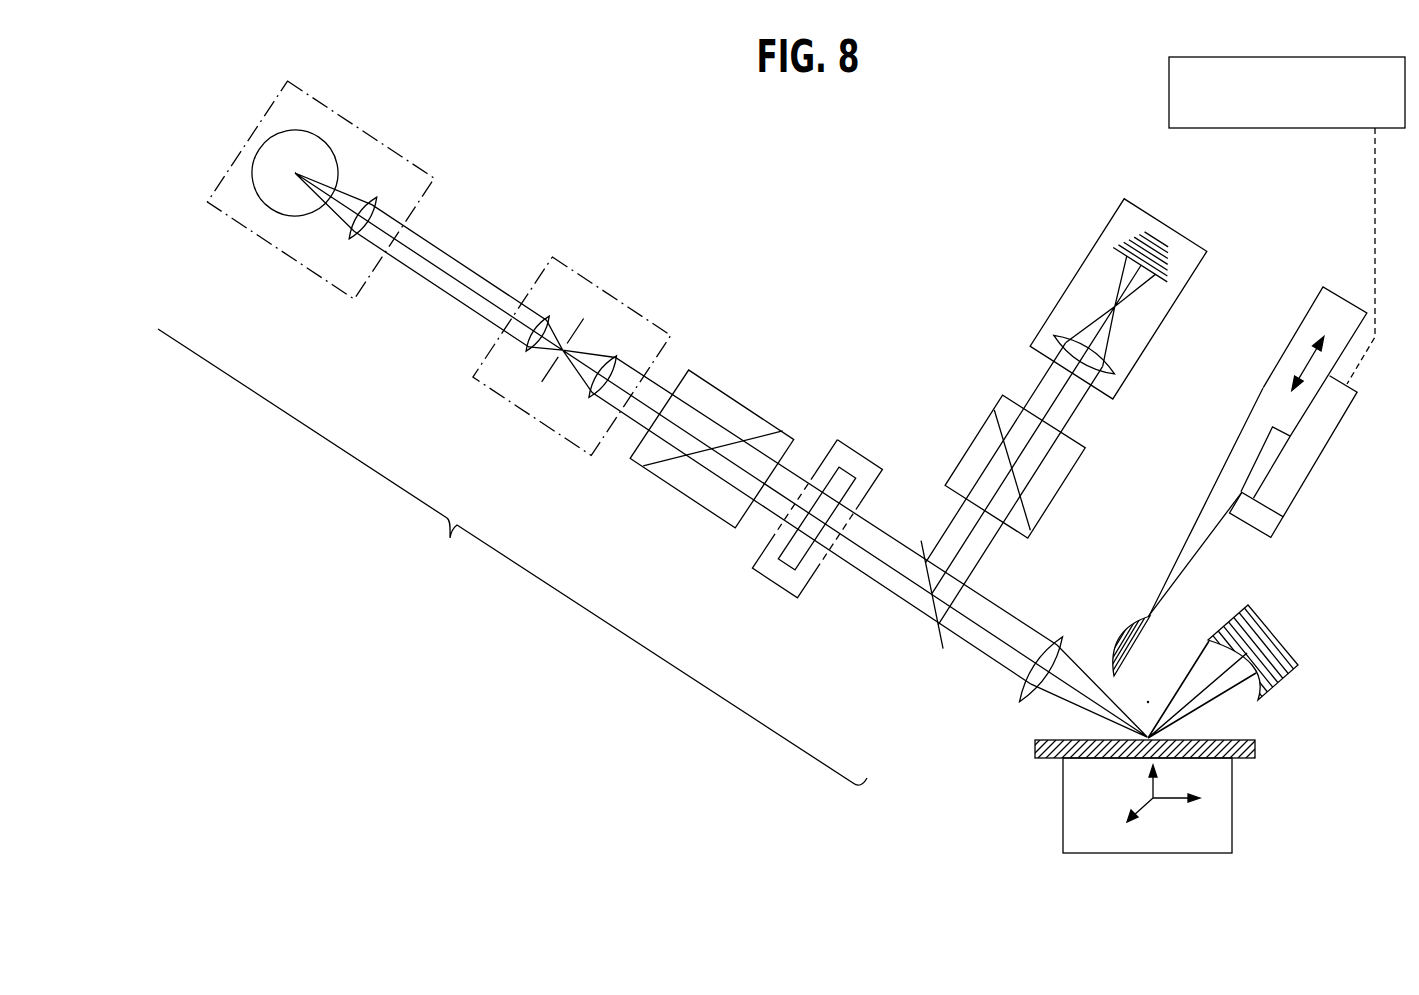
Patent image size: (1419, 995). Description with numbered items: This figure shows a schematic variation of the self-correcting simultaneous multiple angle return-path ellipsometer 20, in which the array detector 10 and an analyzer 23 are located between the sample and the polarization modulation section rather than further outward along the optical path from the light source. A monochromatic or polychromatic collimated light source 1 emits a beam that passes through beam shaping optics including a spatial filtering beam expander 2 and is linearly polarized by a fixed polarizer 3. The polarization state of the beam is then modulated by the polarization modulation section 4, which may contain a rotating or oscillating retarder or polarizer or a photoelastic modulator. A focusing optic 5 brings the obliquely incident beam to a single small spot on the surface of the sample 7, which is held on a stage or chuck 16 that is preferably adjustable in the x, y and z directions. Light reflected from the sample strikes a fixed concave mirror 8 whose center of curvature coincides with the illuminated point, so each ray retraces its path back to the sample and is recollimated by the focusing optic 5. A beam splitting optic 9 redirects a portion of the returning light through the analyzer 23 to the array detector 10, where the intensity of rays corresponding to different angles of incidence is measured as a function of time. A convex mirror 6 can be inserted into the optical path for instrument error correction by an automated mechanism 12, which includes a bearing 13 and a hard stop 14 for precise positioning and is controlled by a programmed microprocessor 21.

The light source 1 is at (353, 127).
The spatial filtering beam expander 2 is at (575, 270).
The fixed polarizer 3 is at (725, 394).
The polarization modulation section 4 is at (860, 457).
The focusing optic 5 is at (1062, 637).
The convex mirror 6 is at (1133, 655).
The sample 7 is at (1035, 753).
The concave mirror 8 is at (1270, 631).
The beam splitting optic 9 is at (943, 648).
The array detector 10 is at (1208, 252).
The automated mechanism 12 is at (1263, 388).
The bearing 13 is at (1320, 455).
The hard stop 14 is at (1255, 528).
The stage or chuck 16 is at (1063, 800).
The ellipsometer 20 is at (512, 557).
The microprocessor 21 is at (1227, 128).
The analyzer 23 is at (1072, 472).